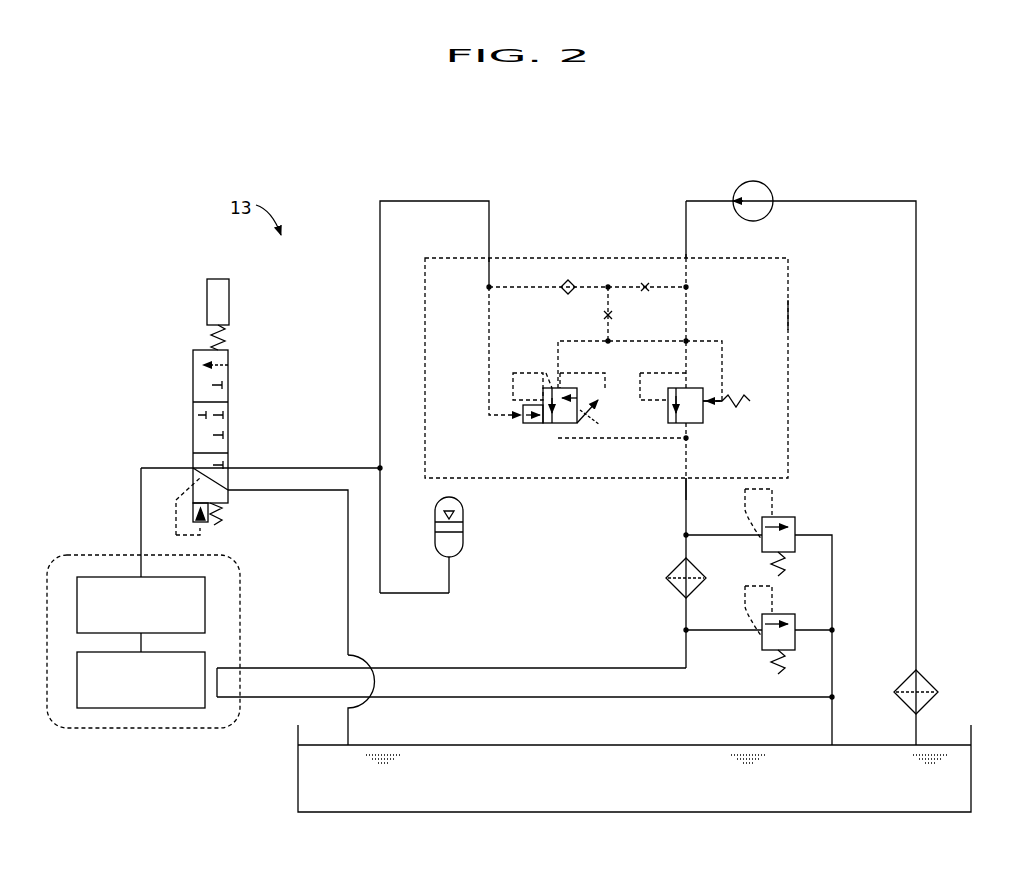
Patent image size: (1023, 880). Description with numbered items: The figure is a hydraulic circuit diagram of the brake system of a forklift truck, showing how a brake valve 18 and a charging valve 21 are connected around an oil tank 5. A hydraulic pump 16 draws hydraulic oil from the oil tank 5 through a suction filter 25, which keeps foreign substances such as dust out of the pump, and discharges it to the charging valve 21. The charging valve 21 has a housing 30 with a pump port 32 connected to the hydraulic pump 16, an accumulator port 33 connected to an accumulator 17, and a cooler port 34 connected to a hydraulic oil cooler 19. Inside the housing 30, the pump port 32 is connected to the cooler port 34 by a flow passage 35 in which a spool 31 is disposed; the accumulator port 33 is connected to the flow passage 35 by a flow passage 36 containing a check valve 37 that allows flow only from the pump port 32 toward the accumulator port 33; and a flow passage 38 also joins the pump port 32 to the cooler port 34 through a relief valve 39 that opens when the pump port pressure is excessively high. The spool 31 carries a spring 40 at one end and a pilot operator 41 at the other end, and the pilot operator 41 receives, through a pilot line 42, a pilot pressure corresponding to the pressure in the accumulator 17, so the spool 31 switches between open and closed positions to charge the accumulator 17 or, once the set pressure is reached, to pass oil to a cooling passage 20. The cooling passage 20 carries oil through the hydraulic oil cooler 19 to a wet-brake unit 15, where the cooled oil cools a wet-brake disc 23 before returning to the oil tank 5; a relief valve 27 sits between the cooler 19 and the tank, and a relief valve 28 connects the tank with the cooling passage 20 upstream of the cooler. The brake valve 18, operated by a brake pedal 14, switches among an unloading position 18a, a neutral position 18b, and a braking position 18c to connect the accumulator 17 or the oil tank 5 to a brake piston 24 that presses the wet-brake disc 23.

The oil tank 5 is at (971, 780).
The brake pedal 14 is at (231, 285).
The wet-brake unit 15 is at (162, 615).
The hydraulic pump 16 is at (770, 190).
The accumulator 17 is at (465, 555).
The brake valve 18 is at (182, 430).
The unloading position 18a is at (193, 462).
The neutral position 18b is at (193, 426).
The braking position 18c is at (193, 378).
The hydraulic oil cooler 19 is at (678, 592).
The cooling passage 20 is at (507, 668).
The charging valve 21 is at (788, 312).
The wet-brake disc 23 is at (178, 709).
The brake piston 24 is at (206, 588).
The suction filter 25 is at (938, 690).
The relief valve 27 is at (760, 640).
The relief valve 28 is at (796, 522).
The housing 30 is at (592, 258).
The spool 31 is at (569, 420).
The pump port 32 is at (686, 258).
The accumulator port 33 is at (489, 258).
The cooler port 34 is at (686, 484).
The flow passage 35 is at (558, 365).
The flow passage 36 is at (533, 287).
The check valve 37 is at (566, 293).
The flow passage 38 is at (686, 300).
The relief valve 39 is at (705, 420).
The spring 40 is at (600, 416).
The pilot operator 41 is at (522, 425).
The pilot line 42 is at (489, 355).